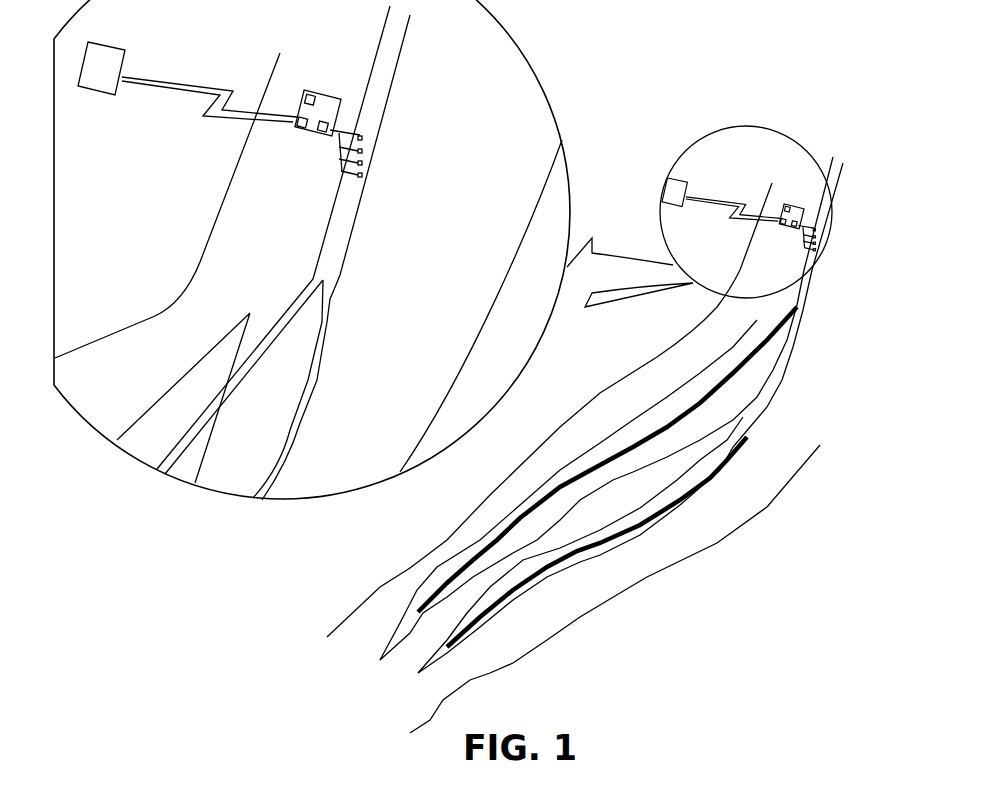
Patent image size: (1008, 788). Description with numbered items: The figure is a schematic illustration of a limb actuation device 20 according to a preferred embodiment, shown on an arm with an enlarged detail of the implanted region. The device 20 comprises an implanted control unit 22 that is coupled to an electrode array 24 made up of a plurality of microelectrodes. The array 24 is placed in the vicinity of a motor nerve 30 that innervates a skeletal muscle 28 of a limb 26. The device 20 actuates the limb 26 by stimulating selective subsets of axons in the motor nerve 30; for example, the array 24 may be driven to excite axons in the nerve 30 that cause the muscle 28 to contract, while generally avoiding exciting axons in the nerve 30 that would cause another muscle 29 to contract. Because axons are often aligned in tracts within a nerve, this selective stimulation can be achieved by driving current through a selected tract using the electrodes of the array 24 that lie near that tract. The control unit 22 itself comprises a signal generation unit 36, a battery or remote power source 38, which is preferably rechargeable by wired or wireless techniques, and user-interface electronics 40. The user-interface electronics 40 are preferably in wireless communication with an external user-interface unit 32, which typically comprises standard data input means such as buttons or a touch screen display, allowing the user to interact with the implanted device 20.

The limb actuation device 20 is at (712, 163).
The implanted control unit 22 is at (337, 90).
The electrode array 24 is at (386, 192).
The limb 26 is at (210, 235).
The skeletal muscle 28 is at (693, 388).
The another muscle 29 is at (733, 472).
The motor nerve 30 is at (380, 97).
The external user-interface unit 32 is at (92, 86).
The signal generation unit 36 is at (325, 140).
The battery or remote power source 38 is at (310, 92).
The user-interface electronics 40 is at (298, 132).